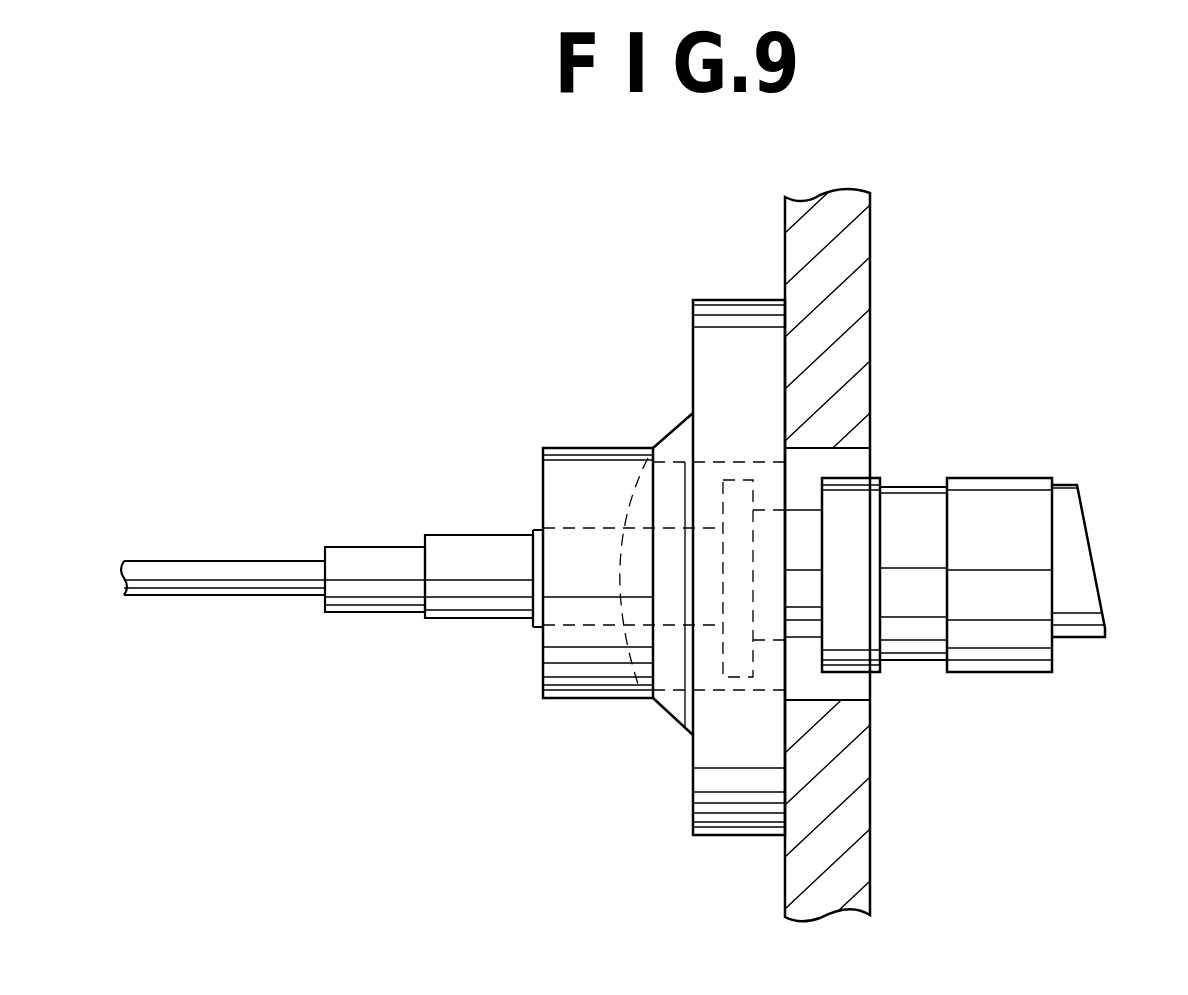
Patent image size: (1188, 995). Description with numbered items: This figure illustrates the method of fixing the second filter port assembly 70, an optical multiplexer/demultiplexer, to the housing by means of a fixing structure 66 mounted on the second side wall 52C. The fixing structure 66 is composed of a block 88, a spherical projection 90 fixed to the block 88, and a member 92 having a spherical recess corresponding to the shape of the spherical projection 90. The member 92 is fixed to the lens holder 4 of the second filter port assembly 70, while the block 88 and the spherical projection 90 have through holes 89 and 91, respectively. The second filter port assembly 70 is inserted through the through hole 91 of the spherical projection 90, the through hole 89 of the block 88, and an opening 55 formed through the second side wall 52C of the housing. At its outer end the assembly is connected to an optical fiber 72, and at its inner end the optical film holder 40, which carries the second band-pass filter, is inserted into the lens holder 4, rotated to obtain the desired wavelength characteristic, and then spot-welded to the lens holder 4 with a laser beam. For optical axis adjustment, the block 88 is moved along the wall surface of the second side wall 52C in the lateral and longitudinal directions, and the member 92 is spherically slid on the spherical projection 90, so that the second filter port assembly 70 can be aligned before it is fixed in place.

The optical fiber 72 is at (222, 560).
The member having a spherical recess 92 is at (567, 458).
The spherical projection 90 is at (630, 655).
The fixing structure 66 is at (654, 436).
The through hole 91 is at (668, 690).
The block 88 is at (738, 315).
The through hole 89 is at (736, 690).
The second side wall 52C is at (862, 268).
The second filter port assembly 70 is at (882, 678).
The opening 55 is at (852, 452).
The lens holder 4 is at (998, 677).
The optical film holder 40 is at (1085, 563).